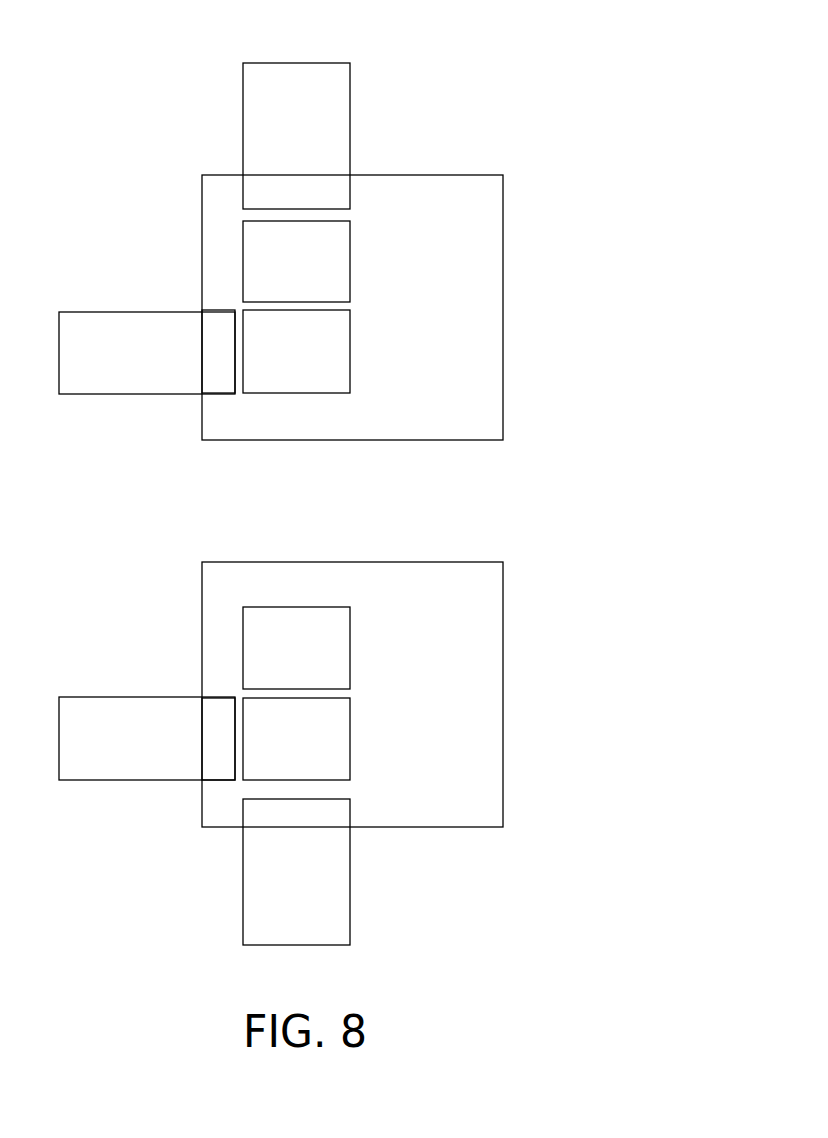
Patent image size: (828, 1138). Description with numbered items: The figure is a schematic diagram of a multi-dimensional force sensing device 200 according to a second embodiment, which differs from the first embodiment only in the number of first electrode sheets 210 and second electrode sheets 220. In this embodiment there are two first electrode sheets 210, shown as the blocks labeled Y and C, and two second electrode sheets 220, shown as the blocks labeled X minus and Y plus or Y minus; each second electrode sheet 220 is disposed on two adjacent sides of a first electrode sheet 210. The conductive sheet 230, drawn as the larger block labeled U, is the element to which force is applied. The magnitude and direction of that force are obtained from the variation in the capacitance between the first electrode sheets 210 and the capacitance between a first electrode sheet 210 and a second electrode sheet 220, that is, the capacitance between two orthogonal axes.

The multi-dimensional force sensing device 200 is at (713, 50).
The first electrode sheet 210 is at (333, 322).
The second electrode sheet 220 is at (263, 100).
The conductive sheet 230 is at (483, 250).